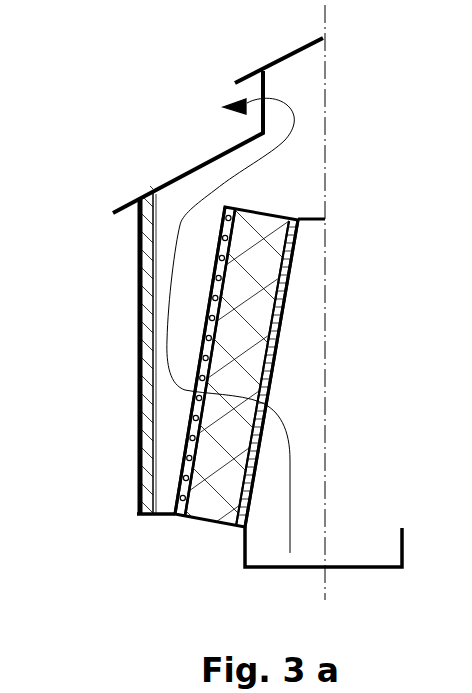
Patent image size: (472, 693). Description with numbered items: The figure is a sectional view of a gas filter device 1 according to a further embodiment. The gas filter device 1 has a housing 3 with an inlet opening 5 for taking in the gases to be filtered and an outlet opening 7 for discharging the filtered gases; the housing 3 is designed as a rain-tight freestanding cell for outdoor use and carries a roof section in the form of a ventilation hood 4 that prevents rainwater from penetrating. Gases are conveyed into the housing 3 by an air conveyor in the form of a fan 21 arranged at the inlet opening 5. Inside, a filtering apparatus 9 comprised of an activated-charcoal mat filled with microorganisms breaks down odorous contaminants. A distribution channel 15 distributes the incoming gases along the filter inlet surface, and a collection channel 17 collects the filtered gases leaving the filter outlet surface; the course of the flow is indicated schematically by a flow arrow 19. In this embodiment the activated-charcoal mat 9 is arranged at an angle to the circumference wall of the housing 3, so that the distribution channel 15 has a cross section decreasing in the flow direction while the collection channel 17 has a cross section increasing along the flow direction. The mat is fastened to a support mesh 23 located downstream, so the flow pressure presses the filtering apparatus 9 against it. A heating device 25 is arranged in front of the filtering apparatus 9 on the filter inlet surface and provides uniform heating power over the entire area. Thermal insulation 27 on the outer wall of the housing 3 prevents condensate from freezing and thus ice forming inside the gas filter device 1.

The gas filter device 1 is at (135, 60).
The housing 3 is at (109, 350).
The ventilation hood 4 is at (290, 53).
The inlet opening 5 is at (273, 557).
The outlet opening 7 is at (263, 124).
The filtering apparatus 9 is at (267, 419).
The distribution channel 15 is at (308, 328).
The collection channel 17 is at (163, 278).
The flow arrow 19 is at (292, 123).
The fan 21 is at (363, 568).
The support mesh 23 is at (170, 513).
The heating device 25 is at (230, 530).
The thermal insulation 27 is at (148, 363).